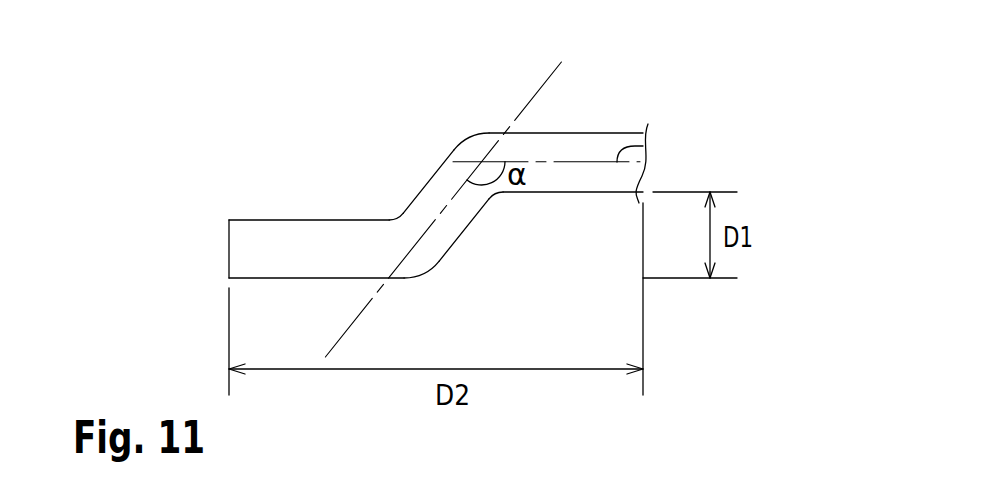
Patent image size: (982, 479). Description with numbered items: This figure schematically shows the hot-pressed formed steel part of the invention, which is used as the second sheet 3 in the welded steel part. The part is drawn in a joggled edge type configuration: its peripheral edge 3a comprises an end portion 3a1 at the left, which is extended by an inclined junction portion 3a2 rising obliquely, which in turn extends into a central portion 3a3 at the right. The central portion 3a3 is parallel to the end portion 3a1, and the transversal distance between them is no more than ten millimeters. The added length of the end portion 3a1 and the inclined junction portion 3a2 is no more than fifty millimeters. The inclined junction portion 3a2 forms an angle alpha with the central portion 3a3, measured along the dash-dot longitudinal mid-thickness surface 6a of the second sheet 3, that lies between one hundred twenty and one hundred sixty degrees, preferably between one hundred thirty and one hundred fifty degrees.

The second sheet 3 is at (475, 191).
The peripheral edge 3a is at (444, 209).
The end portion 3a1 is at (303, 247).
The inclined junction portion 3a2 is at (460, 172).
The central portion 3a3 is at (588, 147).
The longitudinal mid-thickness surface 6a is at (643, 146).